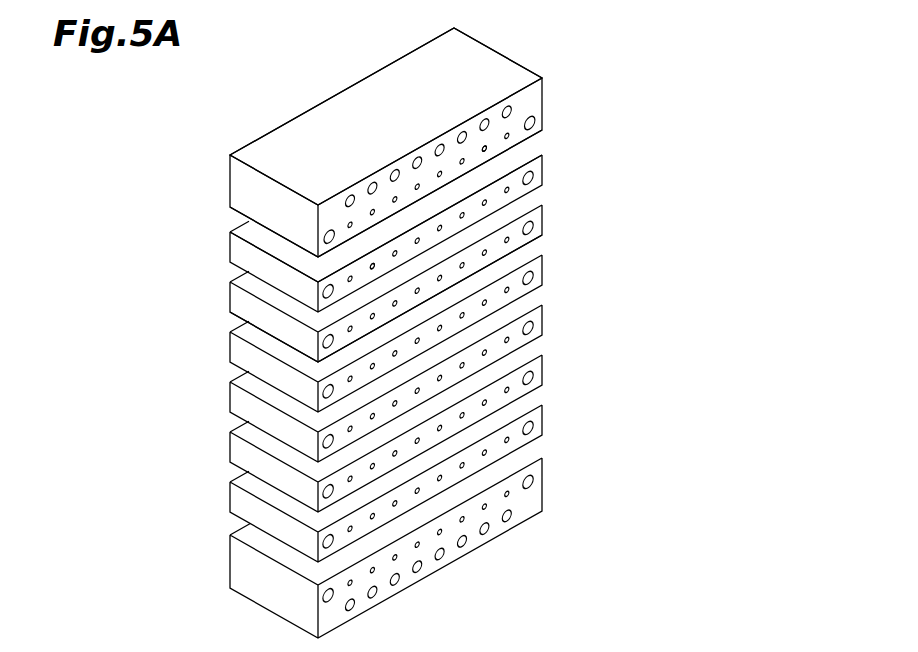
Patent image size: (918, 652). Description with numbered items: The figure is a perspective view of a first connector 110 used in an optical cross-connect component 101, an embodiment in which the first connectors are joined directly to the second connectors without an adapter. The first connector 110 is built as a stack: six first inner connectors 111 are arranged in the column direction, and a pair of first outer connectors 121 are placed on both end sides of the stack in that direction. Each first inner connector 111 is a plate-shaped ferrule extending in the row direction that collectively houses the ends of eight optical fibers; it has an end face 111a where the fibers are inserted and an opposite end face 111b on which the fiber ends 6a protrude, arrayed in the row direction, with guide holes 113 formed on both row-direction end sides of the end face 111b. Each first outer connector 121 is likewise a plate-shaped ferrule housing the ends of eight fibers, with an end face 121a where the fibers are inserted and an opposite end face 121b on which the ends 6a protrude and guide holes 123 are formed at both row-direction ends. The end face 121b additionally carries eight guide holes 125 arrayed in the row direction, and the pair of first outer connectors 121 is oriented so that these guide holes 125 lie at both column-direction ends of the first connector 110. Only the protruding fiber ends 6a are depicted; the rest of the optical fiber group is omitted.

The first connector 110 is at (435, 326).
The optical cross-connect component 101 is at (640, 124).
The first outer connector 121 is at (378, 333).
The end face 121a is at (230, 173).
The end face 121b is at (330, 211).
The first inner connector 111 is at (377, 358).
The end face 111a is at (230, 243).
The end face 111b is at (268, 335).
The guide holes 125 is at (352, 196).
The guide holes 123 is at (531, 127).
The guide holes 113 is at (530, 178).
The end of optical fiber 6a is at (483, 151).